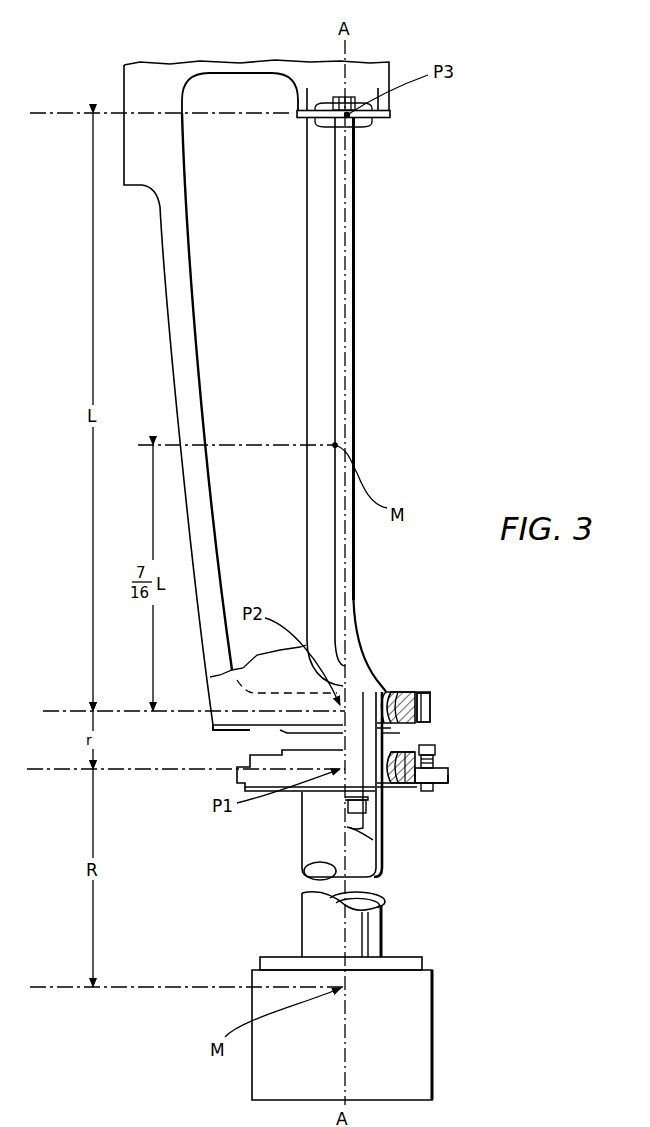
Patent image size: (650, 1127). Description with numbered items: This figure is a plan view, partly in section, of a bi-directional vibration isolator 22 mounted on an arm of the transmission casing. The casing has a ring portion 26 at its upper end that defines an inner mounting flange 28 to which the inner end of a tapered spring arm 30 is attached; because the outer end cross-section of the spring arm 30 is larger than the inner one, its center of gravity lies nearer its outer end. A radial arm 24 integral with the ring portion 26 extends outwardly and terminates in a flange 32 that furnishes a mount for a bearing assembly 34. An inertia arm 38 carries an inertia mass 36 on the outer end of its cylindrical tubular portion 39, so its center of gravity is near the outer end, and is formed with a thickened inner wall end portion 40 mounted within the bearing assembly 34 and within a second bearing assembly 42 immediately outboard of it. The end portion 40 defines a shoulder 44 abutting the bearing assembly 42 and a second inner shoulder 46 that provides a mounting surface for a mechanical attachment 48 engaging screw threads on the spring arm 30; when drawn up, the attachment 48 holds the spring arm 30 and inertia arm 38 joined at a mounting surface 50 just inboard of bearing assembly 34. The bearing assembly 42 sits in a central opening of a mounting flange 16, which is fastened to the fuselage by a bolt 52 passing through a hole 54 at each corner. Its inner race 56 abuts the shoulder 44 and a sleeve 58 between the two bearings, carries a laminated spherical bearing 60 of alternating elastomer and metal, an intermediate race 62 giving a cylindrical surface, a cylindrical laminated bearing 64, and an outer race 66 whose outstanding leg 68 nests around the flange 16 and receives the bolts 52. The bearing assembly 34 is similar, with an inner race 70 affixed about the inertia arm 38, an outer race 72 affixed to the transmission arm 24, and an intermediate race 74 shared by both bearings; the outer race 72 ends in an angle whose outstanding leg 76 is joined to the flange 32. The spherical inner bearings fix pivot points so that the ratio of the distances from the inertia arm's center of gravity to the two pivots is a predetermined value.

The mounting flange 16 is at (450, 779).
The valve assembly 22 is at (450, 463).
The radial arm 24 is at (176, 294).
The ring portion 26 is at (187, 68).
The inner mounting flange 28 is at (390, 120).
The spring arm 30 is at (357, 430).
The flange 32 is at (228, 718).
The bearing assembly 34 is at (527, 638).
The inertia mass 36 is at (415, 1057).
The inertia arm 38 is at (295, 932).
The cylindrical tubular portion 39 is at (368, 935).
The thickened inner wall end portion 40 is at (343, 739).
The second bearing assembly 42 is at (404, 834).
The shoulder 44 is at (345, 800).
The second inner shoulder 46 is at (347, 813).
The mechanical attachment 48 is at (305, 873).
The mounting surface 50 is at (383, 688).
The bolt 52 is at (437, 785).
The hole 54 is at (433, 760).
The inner race 56 is at (240, 778).
The sleeve 58 is at (400, 740).
The laminated spherical bearing 60 is at (400, 748).
The intermediate race 62 is at (395, 785).
The cylindrical laminated bearing 64 is at (405, 785).
The outer race 66 is at (448, 775).
The outstanding leg 68 is at (435, 788).
The inner race 70 is at (393, 692).
The outer race 72 is at (433, 700).
The intermediate race 74 is at (408, 692).
The outstanding leg 76 is at (427, 692).